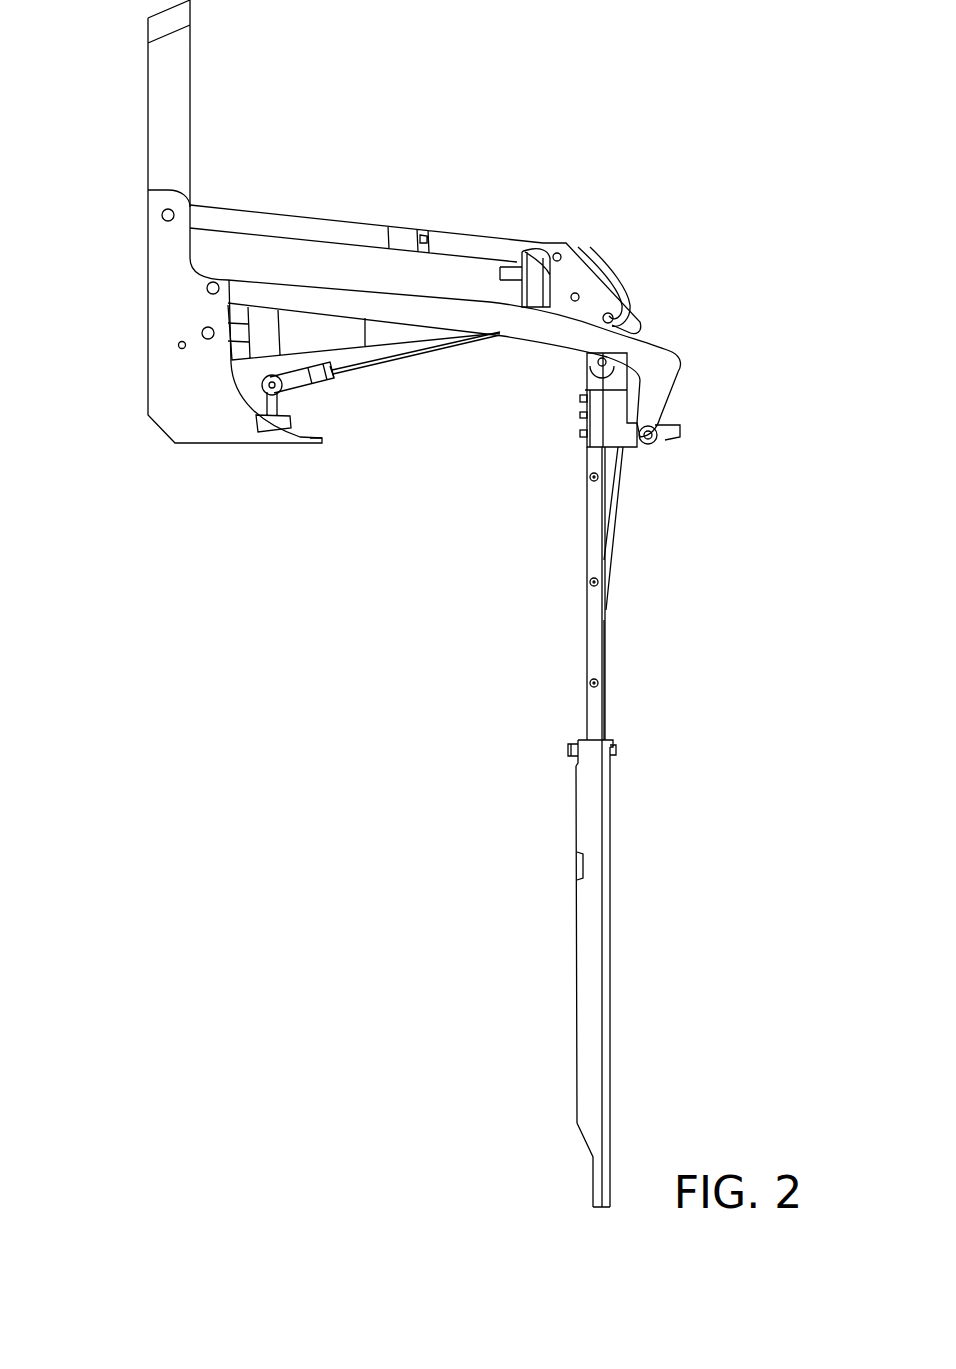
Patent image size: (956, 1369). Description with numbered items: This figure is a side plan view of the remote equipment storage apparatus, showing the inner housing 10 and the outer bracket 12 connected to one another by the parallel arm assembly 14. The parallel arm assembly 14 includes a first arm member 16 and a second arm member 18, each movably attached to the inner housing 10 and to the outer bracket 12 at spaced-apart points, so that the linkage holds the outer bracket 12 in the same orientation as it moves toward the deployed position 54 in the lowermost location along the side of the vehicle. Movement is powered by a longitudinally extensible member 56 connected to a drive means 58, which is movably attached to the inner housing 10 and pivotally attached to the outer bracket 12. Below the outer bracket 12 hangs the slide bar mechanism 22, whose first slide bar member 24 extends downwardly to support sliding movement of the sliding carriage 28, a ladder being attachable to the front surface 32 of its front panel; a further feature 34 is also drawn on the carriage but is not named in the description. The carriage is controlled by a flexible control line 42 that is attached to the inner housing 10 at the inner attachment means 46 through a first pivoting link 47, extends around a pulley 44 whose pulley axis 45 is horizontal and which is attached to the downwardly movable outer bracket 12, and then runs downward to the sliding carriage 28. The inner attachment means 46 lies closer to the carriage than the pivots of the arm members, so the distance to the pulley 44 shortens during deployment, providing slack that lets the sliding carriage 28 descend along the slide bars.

The inner housing 10 is at (177, 83).
The outer bracket 12 is at (610, 412).
The parallel arm assembly 14 is at (445, 302).
The first arm member 16 is at (312, 227).
The second arm member 18 is at (290, 293).
The slide bar mechanism 22 is at (577, 773).
The first slide bar member 24 is at (593, 538).
The sliding carriage 28 is at (583, 1103).
The front surface 32 is at (612, 938).
The notch 34 is at (588, 957).
The flexible control line 42 is at (420, 357).
The pulley 44 is at (638, 308).
The pulley axis 45 is at (606, 314).
The inner attachment means 46 is at (325, 413).
The first pivoting link 47 is at (317, 388).
The deployed position 54 is at (617, 668).
The longitudinally extensible member 56 is at (227, 312).
The drive means 58 is at (331, 328).